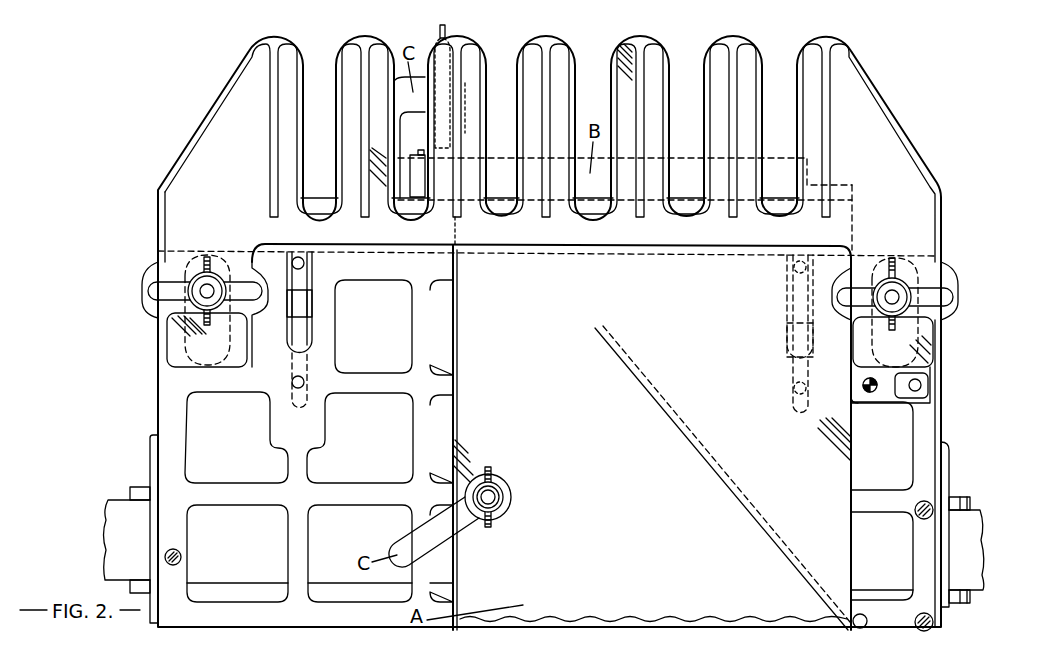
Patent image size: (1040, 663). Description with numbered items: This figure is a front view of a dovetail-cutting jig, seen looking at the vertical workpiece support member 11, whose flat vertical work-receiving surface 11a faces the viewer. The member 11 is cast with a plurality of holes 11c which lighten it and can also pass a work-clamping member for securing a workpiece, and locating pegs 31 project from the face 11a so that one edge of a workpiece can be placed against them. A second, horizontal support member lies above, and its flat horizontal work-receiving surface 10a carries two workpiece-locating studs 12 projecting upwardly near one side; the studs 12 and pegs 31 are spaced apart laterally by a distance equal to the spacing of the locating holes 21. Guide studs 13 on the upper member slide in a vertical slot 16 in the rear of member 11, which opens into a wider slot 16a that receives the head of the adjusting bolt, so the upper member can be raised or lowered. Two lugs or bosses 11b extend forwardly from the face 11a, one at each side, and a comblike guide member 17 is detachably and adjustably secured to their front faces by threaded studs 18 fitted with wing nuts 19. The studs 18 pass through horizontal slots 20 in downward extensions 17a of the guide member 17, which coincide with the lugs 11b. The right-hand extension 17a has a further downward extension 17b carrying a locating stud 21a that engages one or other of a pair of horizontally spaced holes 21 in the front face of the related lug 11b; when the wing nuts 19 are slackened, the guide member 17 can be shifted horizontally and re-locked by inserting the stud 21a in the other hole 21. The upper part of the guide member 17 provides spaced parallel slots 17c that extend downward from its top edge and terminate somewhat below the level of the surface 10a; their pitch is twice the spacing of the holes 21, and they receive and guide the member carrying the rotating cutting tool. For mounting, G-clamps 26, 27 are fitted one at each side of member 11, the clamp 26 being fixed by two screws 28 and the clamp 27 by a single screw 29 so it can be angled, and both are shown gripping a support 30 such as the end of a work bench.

The work-receiving surface 10a is at (312, 192).
The workpiece support member 11 is at (150, 410).
The work-receiving surface 11a is at (420, 445).
The lug 11b is at (192, 343).
The hole 11c is at (443, 302).
The workpiece-locating stud 12 is at (817, 193).
The guide stud 13 is at (304, 265).
The vertical slot 16 is at (297, 338).
The wider slot 16a is at (313, 340).
The guide member 17 is at (232, 112).
The downward extension 17a is at (167, 347).
The further downward extension 17b is at (887, 390).
The slot 17c is at (397, 73).
The threaded stud 18 is at (200, 294).
The wing nut 19 is at (207, 257).
The horizontal slot 20 is at (152, 288).
The locating hole 21 is at (913, 379).
The locating stud 21a is at (871, 392).
The G-clamp 26 is at (949, 478).
The G-clamp 27 is at (148, 465).
The screw 28 is at (924, 500).
The screw 29 is at (165, 556).
The support 30 is at (117, 522).
The locating peg 31 is at (860, 250).